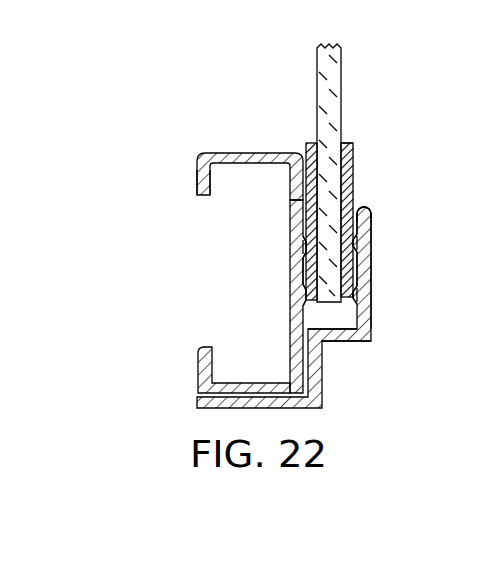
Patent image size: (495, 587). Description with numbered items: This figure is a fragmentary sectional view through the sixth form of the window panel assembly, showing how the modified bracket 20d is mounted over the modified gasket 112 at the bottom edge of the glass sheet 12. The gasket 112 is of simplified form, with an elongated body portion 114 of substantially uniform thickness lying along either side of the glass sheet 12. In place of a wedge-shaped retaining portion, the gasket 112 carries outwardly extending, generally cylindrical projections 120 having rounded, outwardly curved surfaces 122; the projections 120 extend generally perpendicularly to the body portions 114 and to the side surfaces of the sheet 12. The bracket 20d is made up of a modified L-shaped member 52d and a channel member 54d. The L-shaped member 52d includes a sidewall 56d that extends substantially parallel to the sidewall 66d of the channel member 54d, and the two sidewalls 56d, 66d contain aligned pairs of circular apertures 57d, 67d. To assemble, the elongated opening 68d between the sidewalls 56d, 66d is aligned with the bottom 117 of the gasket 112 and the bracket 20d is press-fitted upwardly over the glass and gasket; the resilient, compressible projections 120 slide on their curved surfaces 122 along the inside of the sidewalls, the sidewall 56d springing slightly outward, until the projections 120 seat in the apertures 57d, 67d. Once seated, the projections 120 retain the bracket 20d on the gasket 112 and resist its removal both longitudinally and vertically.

The glass sheet 12 is at (341, 93).
The gasket 112 is at (349, 141).
The body portion 114 is at (308, 155).
The bracket 20d is at (220, 149).
The channel member 54d is at (195, 172).
The sidewall 66d is at (295, 216).
The circular apertures 67d is at (298, 290).
The elongated opening 68d is at (358, 198).
The projections 120 is at (300, 255).
The outwardly curved surfaces 122 is at (300, 250).
The circular apertures 57d is at (365, 258).
The sidewall 56d is at (352, 322).
The bottom 117 is at (332, 342).
The L-shaped member 52d is at (328, 402).